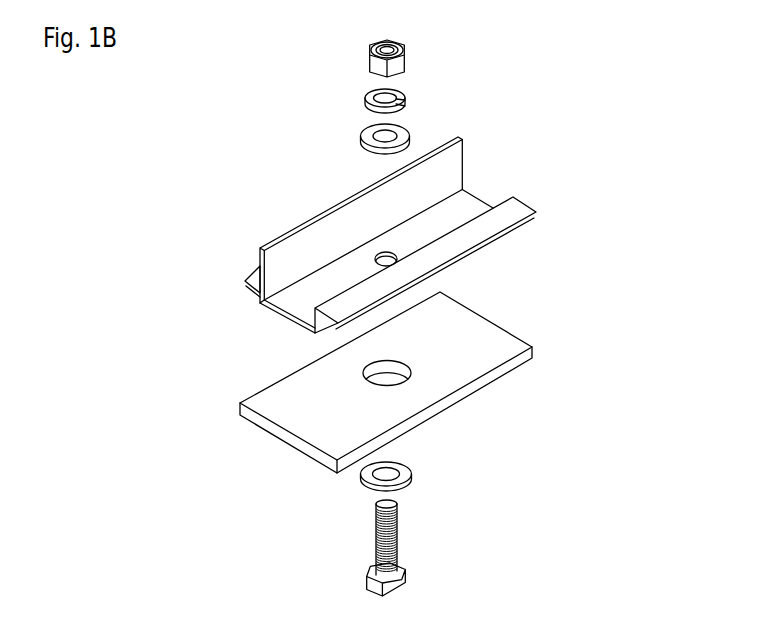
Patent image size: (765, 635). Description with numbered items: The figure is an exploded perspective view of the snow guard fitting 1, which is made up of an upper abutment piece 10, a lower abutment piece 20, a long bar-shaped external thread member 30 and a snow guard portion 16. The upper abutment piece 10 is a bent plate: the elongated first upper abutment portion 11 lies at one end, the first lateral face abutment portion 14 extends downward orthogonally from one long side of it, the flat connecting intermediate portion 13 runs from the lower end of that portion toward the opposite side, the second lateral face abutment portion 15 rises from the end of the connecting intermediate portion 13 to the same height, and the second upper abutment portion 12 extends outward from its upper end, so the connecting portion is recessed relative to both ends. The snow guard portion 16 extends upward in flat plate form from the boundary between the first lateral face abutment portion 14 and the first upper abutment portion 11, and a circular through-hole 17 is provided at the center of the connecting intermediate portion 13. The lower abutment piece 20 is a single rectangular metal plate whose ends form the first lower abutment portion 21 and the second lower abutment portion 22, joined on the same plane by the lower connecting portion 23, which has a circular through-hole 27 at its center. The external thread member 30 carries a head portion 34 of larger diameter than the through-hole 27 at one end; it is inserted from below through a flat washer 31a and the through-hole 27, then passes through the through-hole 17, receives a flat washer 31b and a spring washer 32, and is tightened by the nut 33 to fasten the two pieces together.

The snow guard fitting 1 is at (182, 125).
The upper abutment piece 10 is at (542, 193).
The first upper abutment portion 11 is at (257, 264).
The second upper abutment portion 12 is at (520, 202).
The connecting intermediate portion 13 is at (293, 308).
The first lateral face abutment portion 14 is at (258, 289).
The second lateral face abutment portion 15 is at (315, 336).
The snow guard portion 16 is at (310, 237).
The through-hole 17 is at (390, 252).
The lower abutment piece 20 is at (538, 427).
The first lower abutment portion 21 is at (312, 433).
The second lower abutment portion 22 is at (497, 347).
The lower connecting portion 23 is at (432, 393).
The through-hole 27 is at (391, 368).
The external thread member 30 is at (375, 545).
The flat washer 31a is at (410, 477).
The flat washer 31b is at (360, 141).
The spring washer 32 is at (364, 100).
The nut 33 is at (366, 64).
The head portion 34 is at (367, 580).